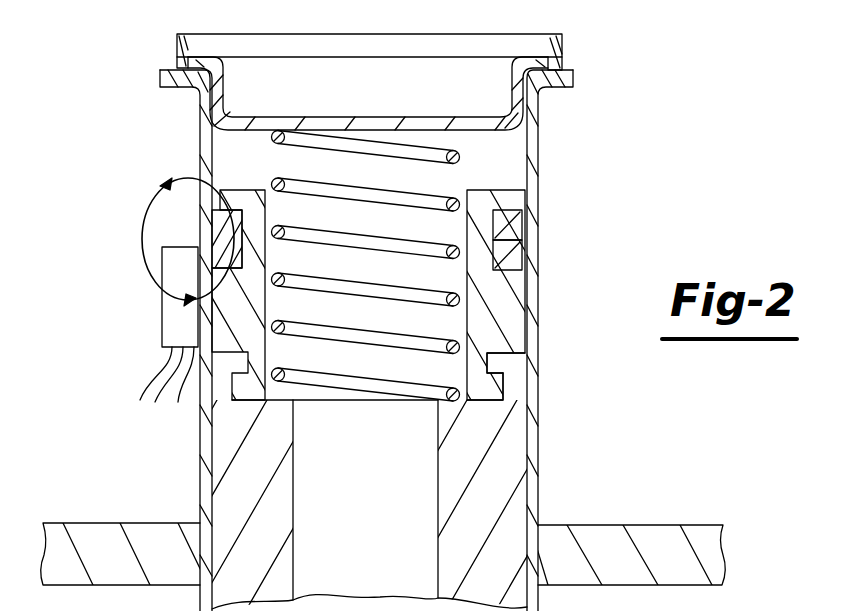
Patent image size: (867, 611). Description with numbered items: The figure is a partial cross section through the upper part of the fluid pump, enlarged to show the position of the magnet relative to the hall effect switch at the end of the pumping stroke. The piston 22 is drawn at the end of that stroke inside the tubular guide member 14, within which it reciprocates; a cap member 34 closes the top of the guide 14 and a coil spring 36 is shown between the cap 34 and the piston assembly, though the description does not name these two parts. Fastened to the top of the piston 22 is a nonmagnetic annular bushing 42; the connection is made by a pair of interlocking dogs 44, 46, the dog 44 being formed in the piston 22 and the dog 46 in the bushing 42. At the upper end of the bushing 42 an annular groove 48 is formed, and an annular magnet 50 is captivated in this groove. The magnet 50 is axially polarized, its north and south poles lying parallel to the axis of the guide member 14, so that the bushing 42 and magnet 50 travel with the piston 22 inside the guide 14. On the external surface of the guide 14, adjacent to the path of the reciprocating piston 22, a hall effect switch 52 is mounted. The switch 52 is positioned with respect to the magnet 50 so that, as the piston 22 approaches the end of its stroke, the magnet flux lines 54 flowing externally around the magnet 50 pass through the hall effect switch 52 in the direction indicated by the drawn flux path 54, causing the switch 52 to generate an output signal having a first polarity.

The guide member 14 is at (540, 160).
The piston 22 is at (455, 495).
The cap 34 is at (558, 35).
The spring 36 is at (350, 382).
The nonmagnetic annular bushing 42 is at (508, 327).
The interlocking dog 44 is at (503, 363).
The interlocking dog 46 is at (492, 390).
The annular groove 48 is at (497, 242).
The annular magnet 50 is at (518, 252).
The hall effect switch 52 is at (172, 325).
The magnet flux lines 54 is at (143, 218).